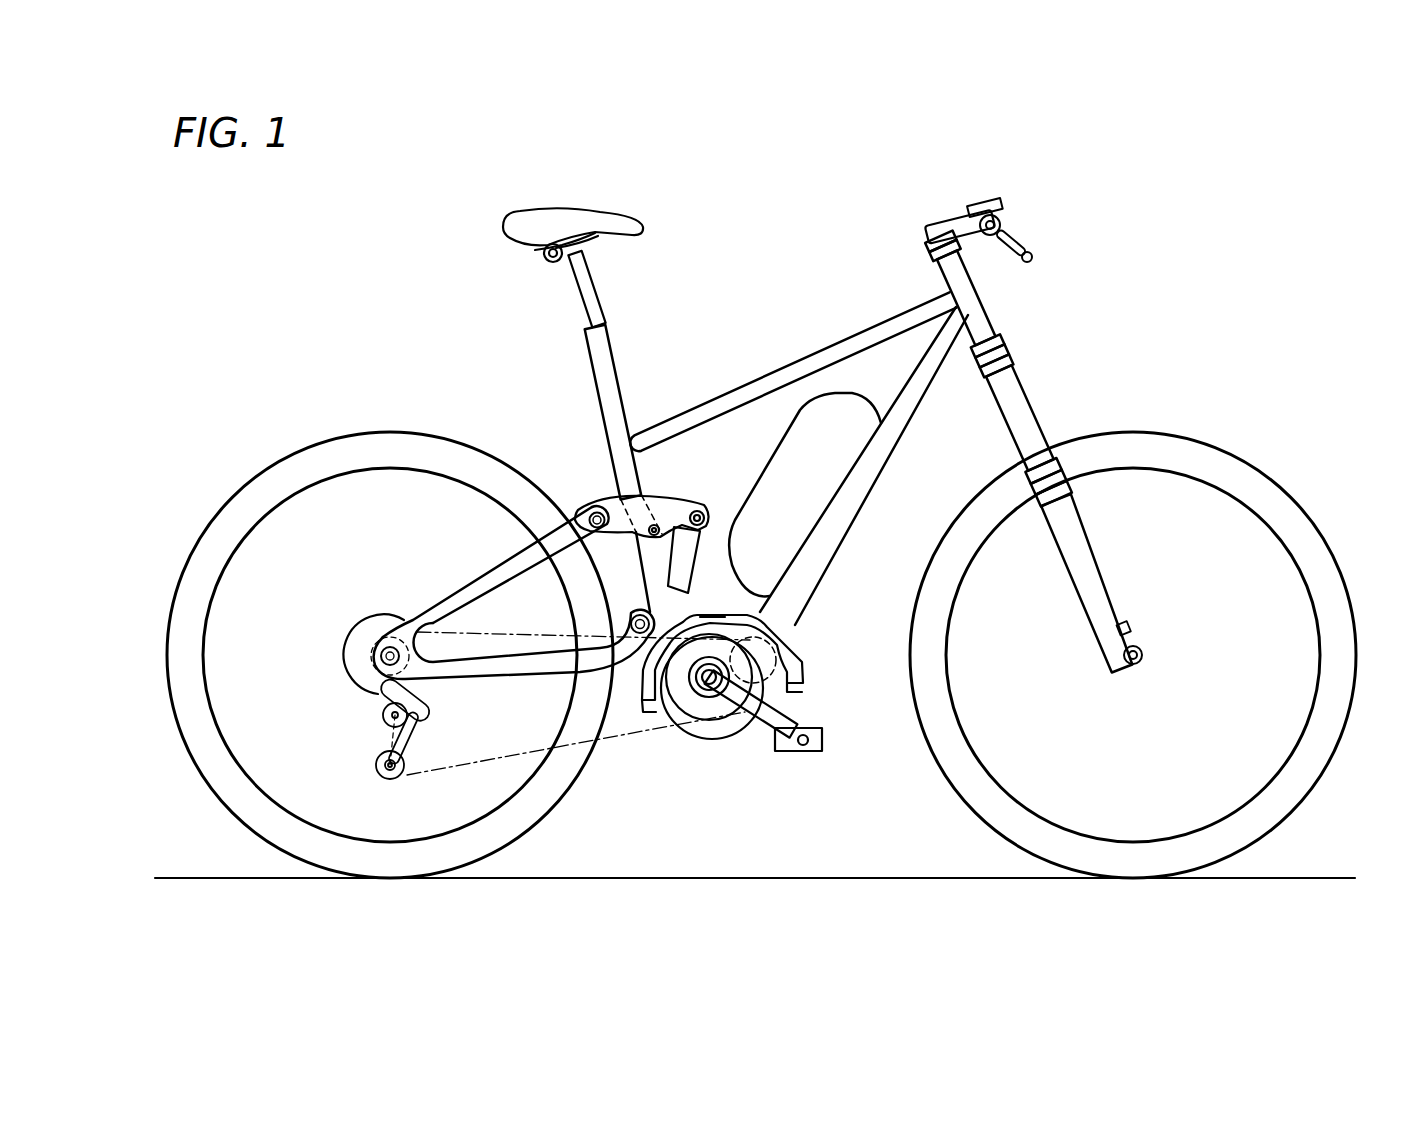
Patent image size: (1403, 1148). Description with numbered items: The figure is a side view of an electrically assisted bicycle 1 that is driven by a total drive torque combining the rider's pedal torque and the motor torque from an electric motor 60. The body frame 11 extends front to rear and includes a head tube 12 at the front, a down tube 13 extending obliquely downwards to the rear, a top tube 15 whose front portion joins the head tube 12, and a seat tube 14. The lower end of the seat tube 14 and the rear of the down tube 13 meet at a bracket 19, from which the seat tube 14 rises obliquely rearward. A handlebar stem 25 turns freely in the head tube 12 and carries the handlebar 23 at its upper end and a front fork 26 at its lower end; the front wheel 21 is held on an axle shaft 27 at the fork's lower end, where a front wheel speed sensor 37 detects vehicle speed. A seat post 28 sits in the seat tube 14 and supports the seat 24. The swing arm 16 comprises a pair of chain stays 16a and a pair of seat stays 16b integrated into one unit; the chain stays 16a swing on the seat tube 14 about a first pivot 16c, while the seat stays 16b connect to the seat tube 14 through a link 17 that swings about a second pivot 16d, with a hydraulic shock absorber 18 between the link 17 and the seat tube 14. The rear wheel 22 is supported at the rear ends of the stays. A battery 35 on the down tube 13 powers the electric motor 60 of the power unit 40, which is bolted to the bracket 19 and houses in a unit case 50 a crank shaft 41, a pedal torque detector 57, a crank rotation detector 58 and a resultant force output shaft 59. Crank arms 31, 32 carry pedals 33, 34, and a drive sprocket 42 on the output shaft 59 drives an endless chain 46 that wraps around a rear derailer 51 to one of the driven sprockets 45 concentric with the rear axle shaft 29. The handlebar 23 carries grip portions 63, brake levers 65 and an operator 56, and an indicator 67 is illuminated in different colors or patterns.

The electrically assisted bicycle 1 is at (499, 166).
The body frame 11 is at (831, 428).
The head tube 12 is at (989, 302).
The down tube 13 is at (927, 416).
The seat tube 14 is at (614, 338).
The top tube 15 is at (835, 345).
The swing arm 16 is at (514, 602).
The chain stays 16a is at (470, 687).
The seat stays 16b is at (452, 592).
The first pivot 16c is at (629, 620).
The second pivot 16d is at (605, 506).
The link 17 is at (670, 494).
The hydraulic shock absorber 18 is at (700, 548).
The bracket 19 is at (798, 632).
The front wheel 21 is at (1225, 450).
The rear wheel 22 is at (309, 444).
The handlebar 23 is at (948, 228).
The seat 24 is at (584, 209).
The handlebar stem 25 is at (968, 255).
The front fork 26 is at (1080, 580).
The axle shaft 27 is at (1143, 657).
The seat post 28 is at (596, 290).
The rear axle shaft 29 is at (381, 655).
The crank arm 31 is at (807, 703).
The crank arm 32 is at (790, 706).
The pedal 33 is at (824, 782).
The pedal 34 is at (818, 752).
The battery 35 is at (792, 420).
The front wheel speed sensor 37 is at (1132, 628).
The power unit 40 is at (754, 704).
The crank shaft 41 is at (672, 718).
The drive sprocket 42 is at (689, 735).
The driven sprockets 45 is at (356, 686).
The chain 46 is at (528, 770).
The unit case 50 is at (681, 722).
The rear derailer 51 is at (372, 741).
The operator 56 is at (1012, 174).
The pedal torque detector 57 is at (724, 748).
The crank rotation detector 58 is at (713, 692).
The resultant force output shaft 59 is at (712, 615).
The electric motor 60 is at (780, 668).
The grip portions 63 is at (1002, 219).
The brake levers 65 is at (1033, 246).
The indicator 67 is at (993, 200).